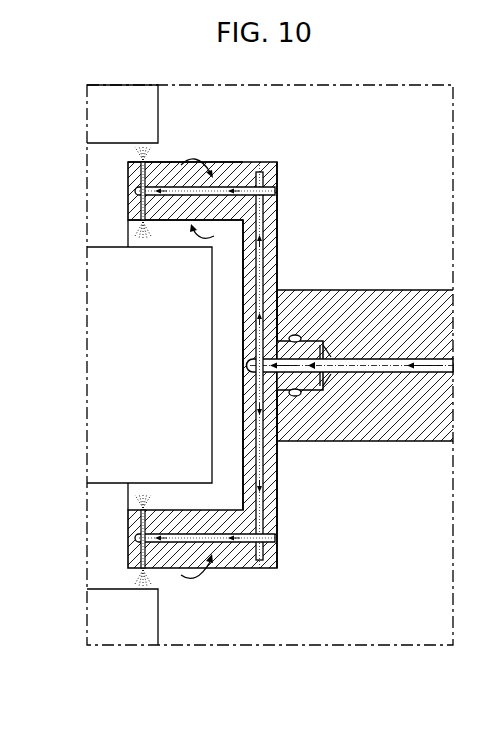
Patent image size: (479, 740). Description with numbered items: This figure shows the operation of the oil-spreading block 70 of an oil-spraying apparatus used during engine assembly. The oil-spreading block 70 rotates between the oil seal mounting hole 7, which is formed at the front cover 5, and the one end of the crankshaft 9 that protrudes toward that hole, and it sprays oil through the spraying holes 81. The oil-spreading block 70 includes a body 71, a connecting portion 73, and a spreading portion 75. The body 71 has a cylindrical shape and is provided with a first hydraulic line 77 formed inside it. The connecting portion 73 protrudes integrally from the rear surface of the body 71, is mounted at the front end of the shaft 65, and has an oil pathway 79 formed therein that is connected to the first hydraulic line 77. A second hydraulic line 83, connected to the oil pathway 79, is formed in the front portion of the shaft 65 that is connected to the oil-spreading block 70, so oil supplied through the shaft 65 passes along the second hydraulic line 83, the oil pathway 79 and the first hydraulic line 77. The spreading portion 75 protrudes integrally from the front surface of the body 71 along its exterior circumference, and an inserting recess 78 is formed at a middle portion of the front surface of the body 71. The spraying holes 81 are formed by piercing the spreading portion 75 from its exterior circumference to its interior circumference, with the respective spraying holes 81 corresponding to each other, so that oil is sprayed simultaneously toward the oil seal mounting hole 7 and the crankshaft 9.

The front cover 5 is at (96, 628).
The oil seal mounting hole 7 is at (95, 577).
The crankshaft 9 is at (100, 410).
The shaft 65 is at (417, 300).
The oil-spreading block 70 is at (236, 149).
The body 71 is at (277, 218).
The connecting portion 73 is at (312, 345).
The spreading portion 75 is at (174, 163).
The first hydraulic line 77 is at (262, 270).
The inserting recess 78 is at (213, 182).
The oil pathway 79 is at (322, 360).
The spraying holes 81 is at (133, 162).
The second hydraulic line 83 is at (388, 354).